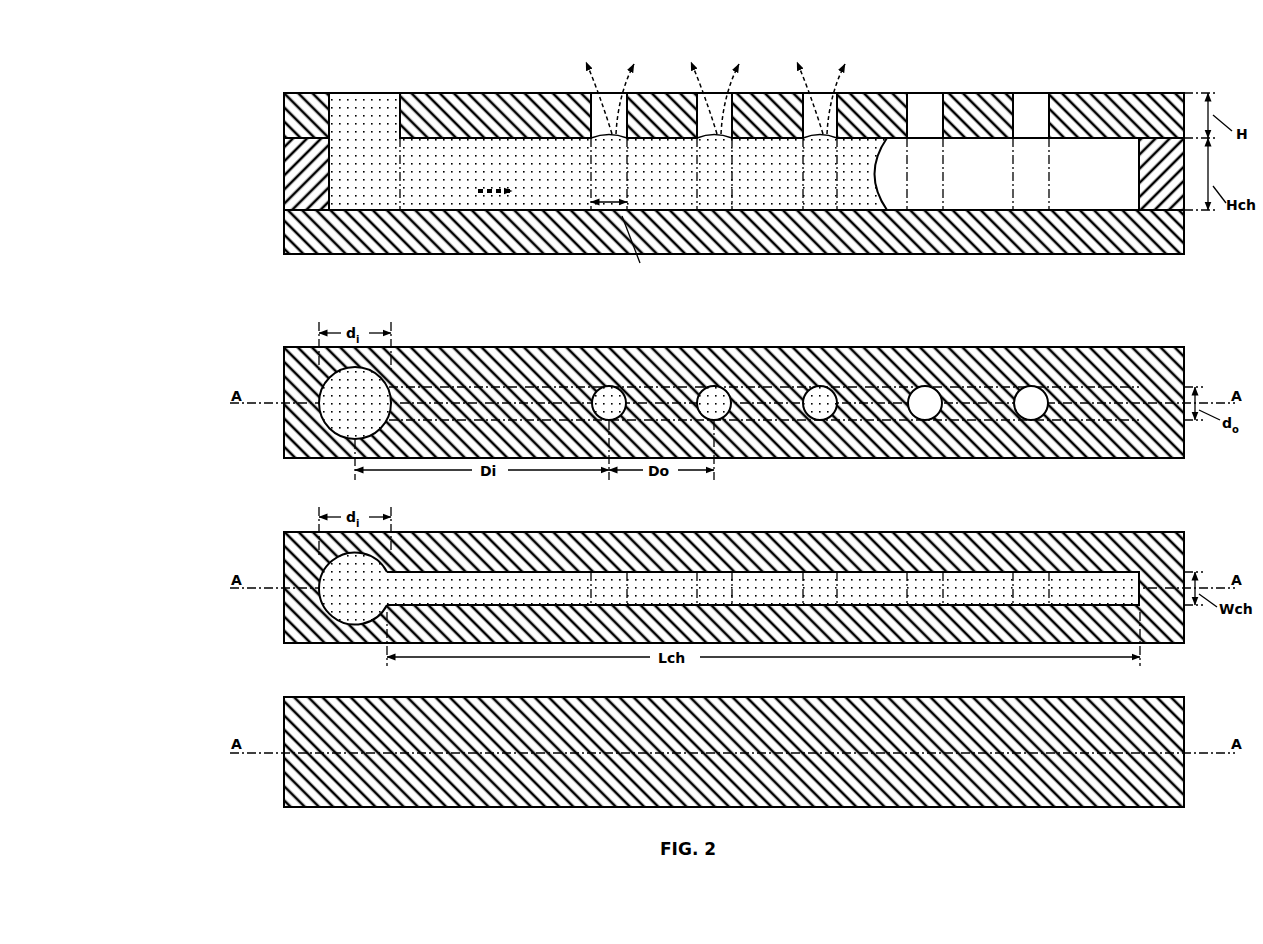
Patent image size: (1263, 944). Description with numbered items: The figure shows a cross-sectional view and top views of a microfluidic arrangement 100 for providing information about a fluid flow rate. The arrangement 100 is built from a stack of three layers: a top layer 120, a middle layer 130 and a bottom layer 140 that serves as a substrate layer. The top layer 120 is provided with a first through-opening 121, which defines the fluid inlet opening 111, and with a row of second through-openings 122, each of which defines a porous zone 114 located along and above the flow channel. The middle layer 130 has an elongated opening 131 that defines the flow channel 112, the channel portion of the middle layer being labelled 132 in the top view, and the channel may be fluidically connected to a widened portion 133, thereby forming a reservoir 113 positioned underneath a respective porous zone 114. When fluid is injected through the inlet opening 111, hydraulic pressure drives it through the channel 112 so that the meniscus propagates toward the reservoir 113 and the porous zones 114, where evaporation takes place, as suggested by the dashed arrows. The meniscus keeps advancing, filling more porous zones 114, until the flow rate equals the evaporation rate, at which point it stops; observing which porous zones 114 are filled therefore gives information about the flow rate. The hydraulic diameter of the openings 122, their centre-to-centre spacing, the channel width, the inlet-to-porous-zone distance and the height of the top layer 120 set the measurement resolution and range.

The arrangement 100 is at (148, 54).
The fluid inlet opening 111 is at (375, 120).
The flow channel 112 is at (445, 188).
The reservoir 113 is at (598, 170).
The porous zone 114 is at (617, 92).
The top layer 120 is at (284, 120).
The first through-opening 121 is at (365, 390).
The second through-opening 122 is at (613, 390).
The middle layer 130 is at (284, 176).
The elongated opening 131 is at (367, 590).
The channel in middle layer 132 is at (508, 590).
The widened portion 133 is at (603, 590).
The bottom layer 140 is at (284, 233).